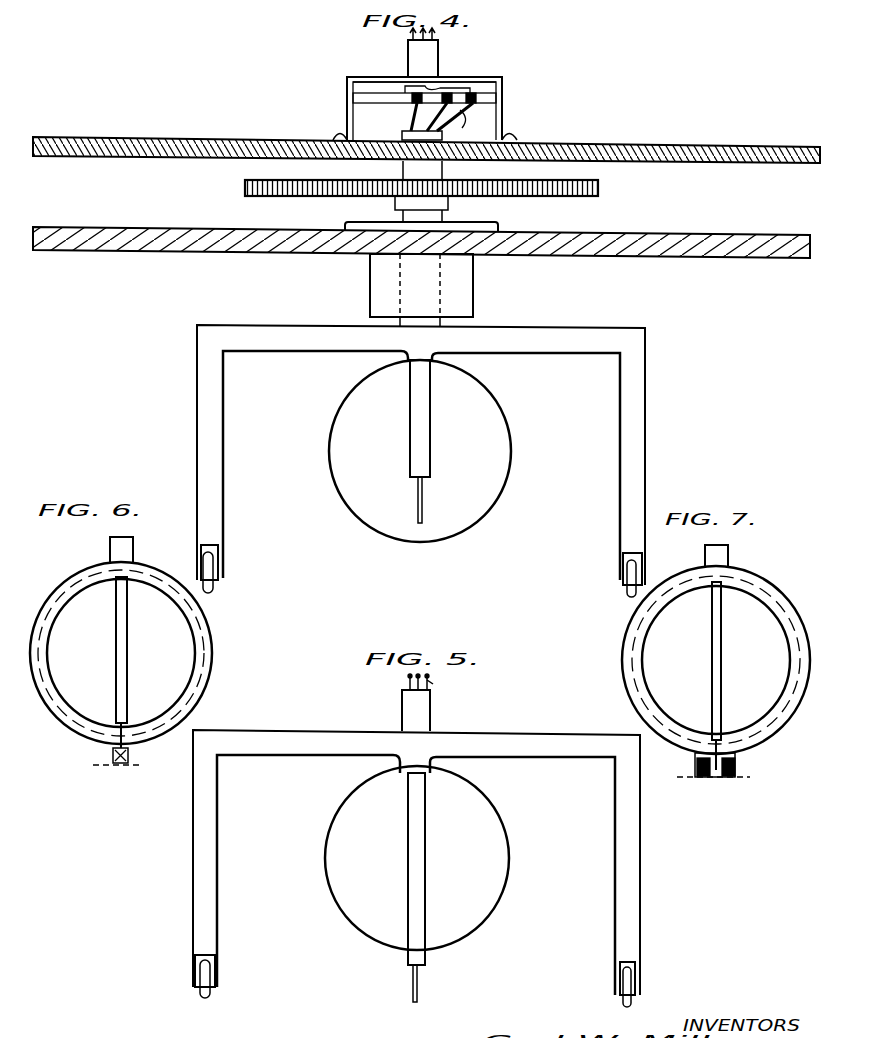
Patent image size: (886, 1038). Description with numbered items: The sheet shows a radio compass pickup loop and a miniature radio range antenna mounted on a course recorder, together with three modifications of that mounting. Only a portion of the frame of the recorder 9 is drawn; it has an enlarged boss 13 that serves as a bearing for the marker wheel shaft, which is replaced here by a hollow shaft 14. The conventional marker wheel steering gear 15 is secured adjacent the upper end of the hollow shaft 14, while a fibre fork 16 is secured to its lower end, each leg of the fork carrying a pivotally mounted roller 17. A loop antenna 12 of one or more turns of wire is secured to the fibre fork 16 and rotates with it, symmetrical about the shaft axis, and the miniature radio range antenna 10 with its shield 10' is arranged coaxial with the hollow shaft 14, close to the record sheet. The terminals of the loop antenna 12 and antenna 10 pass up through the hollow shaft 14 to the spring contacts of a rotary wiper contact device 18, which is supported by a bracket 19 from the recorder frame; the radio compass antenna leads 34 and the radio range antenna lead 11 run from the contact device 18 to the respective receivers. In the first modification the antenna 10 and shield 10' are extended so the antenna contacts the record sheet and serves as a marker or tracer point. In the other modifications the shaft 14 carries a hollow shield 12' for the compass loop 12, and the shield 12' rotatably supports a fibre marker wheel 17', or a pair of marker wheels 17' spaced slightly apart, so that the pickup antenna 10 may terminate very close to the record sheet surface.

In FIG. 4, the recorder 9 is at (680, 261).
In FIG. 4, the miniature radio range antenna 10 is at (440, 500).
In FIG. 6, the miniature radio range antenna 10 is at (139, 725).
In FIG. 7, the miniature radio range antenna 10 is at (740, 756).
In FIG. 5, the miniature radio range antenna 10 is at (434, 983).
In FIG. 4, the shield 10' is at (441, 418).
In FIG. 6, the shield 10' is at (144, 650).
In FIG. 7, the shield 10' is at (736, 661).
In FIG. 5, the shield 10' is at (436, 869).
In FIG. 4, the miniature radio range antenna lead 11 is at (410, 113).
In FIG. 5, the miniature radio range antenna lead 11 is at (406, 686).
In FIG. 4, the loop antenna 12 is at (440, 451).
In FIG. 6, the loop antenna 12 is at (147, 653).
In FIG. 6, the hollow shield 12' is at (145, 653).
In FIG. 7, the hollow shield 12' is at (716, 661).
In FIG. 4, the enlarged boss 13 is at (474, 300).
In FIG. 4, the hollow shaft 14 is at (432, 217).
In FIG. 6, the hollow shaft 14 is at (134, 551).
In FIG. 5, the hollow shaft 14 is at (431, 708).
In FIG. 4, the marker wheel steering gear 15 is at (600, 190).
In FIG. 4, the fibre fork 16 is at (641, 391).
In FIG. 5, the fibre fork 16 is at (636, 893).
In FIG. 4, the roller 17 is at (421, 577).
In FIG. 5, the roller 17 is at (415, 981).
In FIG. 6, the fibre marker wheel 17' is at (129, 757).
In FIG. 7, the fibre marker wheel 17' is at (713, 775).
In FIG. 4, the rotary wiper contact device 18 is at (370, 115).
In FIG. 4, the bracket 19 is at (503, 92).
In FIG. 4, the radio compass antenna leads 34 is at (446, 113).
In FIG. 5, the radio compass antenna leads 34 is at (431, 685).